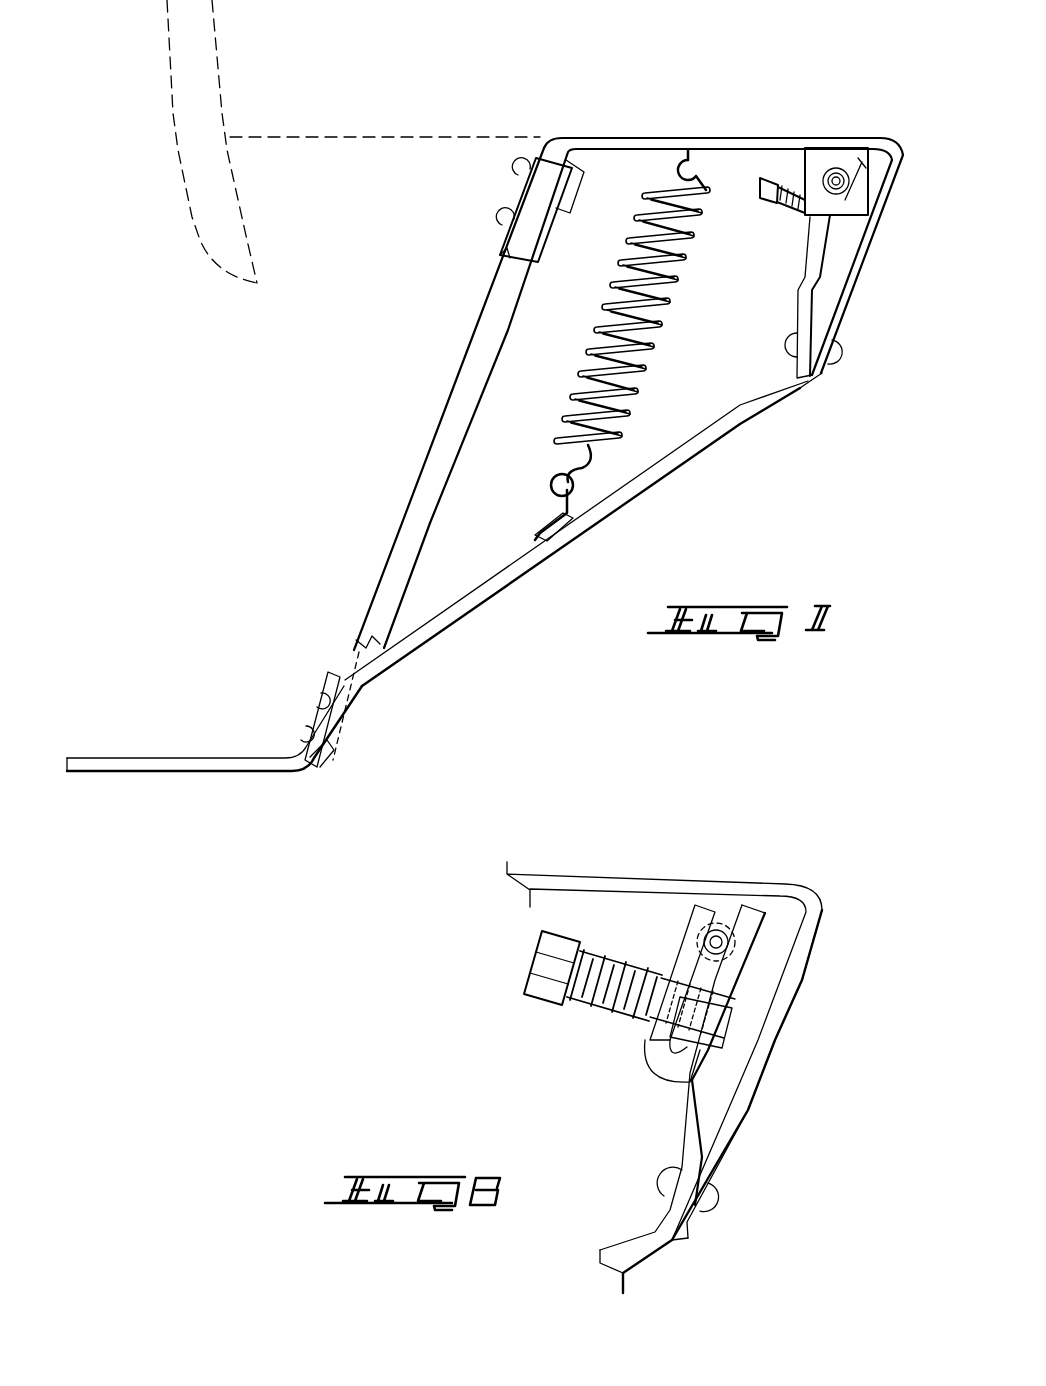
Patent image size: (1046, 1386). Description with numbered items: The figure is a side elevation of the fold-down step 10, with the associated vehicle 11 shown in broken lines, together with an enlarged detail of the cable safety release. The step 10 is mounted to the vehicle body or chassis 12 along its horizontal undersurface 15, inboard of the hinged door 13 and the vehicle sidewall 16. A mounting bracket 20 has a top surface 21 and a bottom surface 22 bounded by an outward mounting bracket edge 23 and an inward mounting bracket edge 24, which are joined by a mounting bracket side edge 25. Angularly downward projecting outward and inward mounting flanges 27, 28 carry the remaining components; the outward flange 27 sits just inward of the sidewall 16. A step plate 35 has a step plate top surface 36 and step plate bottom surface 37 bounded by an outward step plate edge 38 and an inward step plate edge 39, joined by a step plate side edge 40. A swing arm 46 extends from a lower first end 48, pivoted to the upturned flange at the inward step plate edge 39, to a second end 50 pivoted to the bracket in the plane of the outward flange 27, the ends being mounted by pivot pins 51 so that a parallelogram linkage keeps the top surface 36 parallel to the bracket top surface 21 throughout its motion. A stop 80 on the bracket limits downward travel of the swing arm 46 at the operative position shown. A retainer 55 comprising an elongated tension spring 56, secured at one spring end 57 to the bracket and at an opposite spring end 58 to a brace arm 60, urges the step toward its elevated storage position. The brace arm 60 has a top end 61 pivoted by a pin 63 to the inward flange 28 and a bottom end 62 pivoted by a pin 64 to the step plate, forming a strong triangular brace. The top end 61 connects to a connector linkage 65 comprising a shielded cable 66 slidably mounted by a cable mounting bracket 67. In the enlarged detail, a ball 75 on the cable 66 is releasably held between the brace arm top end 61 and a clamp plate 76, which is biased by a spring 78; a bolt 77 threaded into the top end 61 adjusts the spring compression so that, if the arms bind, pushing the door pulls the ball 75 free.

In FIG. 1, the fold-down step 10 is at (345, 450).
In FIG. 1, the vehicle 11 is at (182, 192).
In FIG. 1, the vehicle body or chassis 12 is at (384, 138).
In FIG. 1, the hinged door 13 is at (182, 18).
In FIG. 1, the horizontal undersurface 15 is at (415, 143).
In FIG. 1, the vehicle sidewall 16 is at (172, 112).
In FIG. 1, the mounting bracket 20 is at (722, 136).
In FIG. 6, the mounting bracket 20 is at (592, 870).
In FIG. 1, the top surface 21 is at (633, 143).
In FIG. 1, the bottom surface 22 is at (660, 150).
In FIG. 1, the outward mounting bracket edge 23 is at (548, 137).
In FIG. 1, the inward mounting bracket edge 24 is at (898, 150).
In FIG. 6, the inward mounting bracket edge 24 is at (818, 890).
In FIG. 1, the mounting bracket side edge 25 is at (790, 148).
In FIG. 6, the mounting bracket side edge 25 is at (650, 882).
In FIG. 1, the outward mounting flange 27 is at (500, 262).
In FIG. 1, the inward mounting flange 28 is at (818, 380).
In FIG. 6, the inward mounting flange 28 is at (688, 1232).
In FIG. 1, the step plate 35 is at (166, 781).
In FIG. 1, the step plate top surface 36 is at (222, 757).
In FIG. 1, the step plate bottom surface 37 is at (215, 774).
In FIG. 1, the outward step plate edge 38 is at (64, 774).
In FIG. 1, the inward step plate edge 39 is at (298, 771).
In FIG. 1, the step plate side edge 40 is at (180, 774).
In FIG. 1, the swing arm 46 is at (423, 517).
In FIG. 1, the lower first end 48 is at (338, 752).
In FIG. 1, the second end 50 is at (517, 277).
In FIG. 1, the pivot pin 51 is at (500, 222).
In FIG. 1, the retainer 55 is at (672, 315).
In FIG. 1, the tension spring 56 is at (640, 340).
In FIG. 1, the spring end 57 is at (702, 168).
In FIG. 1, the opposite spring end 58 is at (550, 480).
In FIG. 1, the brace arm 60 is at (622, 516).
In FIG. 1, the top end 61 is at (818, 248).
In FIG. 6, the top end 61 is at (695, 1060).
In FIG. 1, the bottom end 62 is at (355, 700).
In FIG. 1, the pin 63 is at (790, 345).
In FIG. 6, the pin 63 is at (660, 1190).
In FIG. 1, the pin 64 is at (330, 752).
In FIG. 1, the connector linkage 65 is at (840, 163).
In FIG. 6, the connector linkage 65 is at (690, 936).
In FIG. 1, the shielded cable 66 is at (840, 182).
In FIG. 6, the shielded cable 66 is at (720, 944).
In FIG. 1, the cable mounting bracket 67 is at (866, 200).
In FIG. 6, the ball 75 is at (737, 905).
In FIG. 1, the clamp plate 76 is at (803, 227).
In FIG. 6, the clamp plate 76 is at (652, 1062).
In FIG. 6, the bolt 77 is at (522, 992).
In FIG. 6, the spring 78 is at (603, 1028).
In FIG. 1, the stop 80 is at (570, 205).